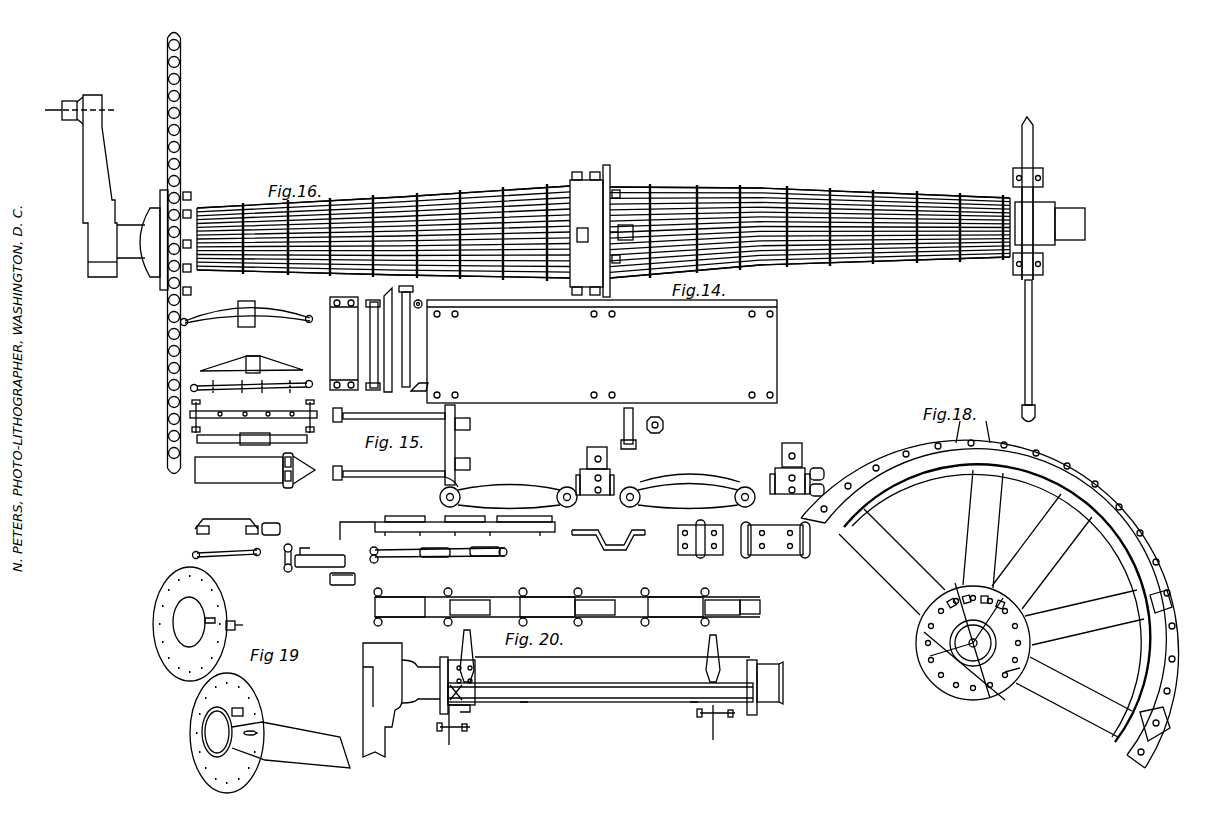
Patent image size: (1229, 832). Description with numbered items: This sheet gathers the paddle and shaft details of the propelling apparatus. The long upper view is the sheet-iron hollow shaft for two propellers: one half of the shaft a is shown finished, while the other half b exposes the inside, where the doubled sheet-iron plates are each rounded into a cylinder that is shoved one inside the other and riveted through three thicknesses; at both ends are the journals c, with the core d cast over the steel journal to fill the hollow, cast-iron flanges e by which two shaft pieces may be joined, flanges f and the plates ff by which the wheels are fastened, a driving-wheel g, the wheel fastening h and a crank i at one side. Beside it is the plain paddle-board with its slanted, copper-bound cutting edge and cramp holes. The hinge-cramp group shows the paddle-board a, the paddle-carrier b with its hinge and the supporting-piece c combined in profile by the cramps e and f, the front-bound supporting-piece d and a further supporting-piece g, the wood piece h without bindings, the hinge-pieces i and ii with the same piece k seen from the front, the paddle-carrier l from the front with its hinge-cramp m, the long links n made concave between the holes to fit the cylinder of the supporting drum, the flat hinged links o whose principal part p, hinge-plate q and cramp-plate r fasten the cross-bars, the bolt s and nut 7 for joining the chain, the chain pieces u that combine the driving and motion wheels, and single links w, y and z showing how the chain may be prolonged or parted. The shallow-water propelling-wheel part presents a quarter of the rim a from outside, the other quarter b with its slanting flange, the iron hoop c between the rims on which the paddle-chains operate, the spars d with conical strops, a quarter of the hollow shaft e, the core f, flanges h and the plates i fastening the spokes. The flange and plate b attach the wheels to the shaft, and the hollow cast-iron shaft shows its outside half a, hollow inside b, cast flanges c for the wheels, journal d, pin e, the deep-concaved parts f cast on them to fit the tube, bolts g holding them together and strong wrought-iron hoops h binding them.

In FIG. 16, the paddle-board / half of shaft / quarter of rim a is at (603, 228).
In FIG. 15, the paddle-board / half of shaft / quarter of rim a is at (389, 332).
In FIG. 19, the paddle-board / half of shaft / quarter of rim a is at (251, 680).
In FIG. 20, the paddle-board / half of shaft / quarter of rim a is at (600, 673).
In FIG. 18, the paddle-board / half of shaft / quarter of rim a is at (990, 594).
In FIG. 15, the paddle-carrier / other half of shaft / slanting flange / plate b is at (406, 329).
In FIG. 19, the paddle-carrier / other half of shaft / slanting flange / plate b is at (224, 667).
In FIG. 18, the paddle-carrier / other half of shaft / slanting flange / plate b is at (1162, 715).
In FIG. 16, the supporting-piece / journals / iron hoop / flanges c is at (601, 209).
In FIG. 15, the supporting-piece / journals / iron hoop / flanges c is at (373, 337).
In FIG. 19, the supporting-piece / journals / iron hoop / flanges c is at (234, 644).
In FIG. 20, the supporting-piece / journals / iron hoop / flanges c is at (586, 683).
In FIG. 18, the supporting-piece / journals / iron hoop / flanges c is at (1171, 597).
In FIG. 16, the supporting-piece / core / spars / journal d is at (597, 235).
In FIG. 15, the supporting-piece / core / spars / journal d is at (344, 335).
In FIG. 20, the supporting-piece / core / spars / journal d is at (401, 700).
In FIG. 18, the supporting-piece / core / spars / journal d is at (997, 603).
In FIG. 16, the cramp / cast-iron flanges / quarter of hollow shaft / pin e is at (601, 228).
In FIG. 15, the cramp / cast-iron flanges / quarter of hollow shaft / pin e is at (419, 297).
In FIG. 20, the cramp / cast-iron flanges / quarter of hollow shaft / pin e is at (770, 676).
In FIG. 18, the cramp / cast-iron flanges / quarter of hollow shaft / pin e is at (973, 641).
In FIG. 16, the cramp / flanges / core / cast filling parts f is at (595, 236).
In FIG. 15, the cramp / flanges / core / cast filling parts f is at (419, 381).
In FIG. 18, the cramp / flanges / core / cast filling parts f is at (967, 668).
In FIG. 16, the plates ff is at (601, 231).
In FIG. 16, the supporting-piece / driving-wheel / bolts g is at (179, 253).
In FIG. 15, the supporting-piece / driving-wheel / bolts g is at (247, 305).
In FIG. 20, the supporting-piece / driving-wheel / bolts g is at (459, 716).
In FIG. 18, the supporting-piece / driving-wheel / bolts g is at (991, 603).
In FIG. 16, the wood piece / wheel fastening / flanges / wrought-iron hoops h is at (1028, 269).
In FIG. 15, the wood piece / wheel fastening / flanges / wrought-iron hoops h is at (251, 355).
In FIG. 20, the wood piece / wheel fastening / flanges / wrought-iron hoops h is at (592, 682).
In FIG. 16, the hinge-piece / crank / plates i is at (81, 186).
In FIG. 15, the hinge-piece / crank / plates i is at (252, 382).
In FIG. 18, the hinge-piece / crank / plates i is at (966, 595).
In FIG. 15, the hinge-piece ii is at (253, 413).
In FIG. 15, the hinge-piece from front k is at (252, 431).
In FIG. 16, the paddle-carrier l is at (623, 227).
In FIG. 15, the paddle-carrier l is at (239, 470).
In FIG. 15, the hinge-cramp m is at (299, 477).
In FIG. 15, the long links n is at (597, 489).
In FIG. 15, the flat links with hinges o is at (700, 469).
In FIG. 15, the principal part of flat link p is at (775, 532).
In FIG. 18, the principal part of flat link p is at (973, 643).
In FIG. 15, the hinge-plate q is at (700, 544).
In FIG. 18, the hinge-plate q is at (1028, 677).
In FIG. 15, the cramp-plate r is at (608, 533).
In FIG. 15, the bolt s is at (625, 425).
In FIG. 15, the nut 7 is at (659, 416).
In FIG. 15, the pieces of the chain u is at (477, 571).
In FIG. 15, the single link of the chain w is at (290, 552).
In FIG. 15, the single link of the chain y is at (320, 553).
In FIG. 15, the single link of the chain z is at (349, 577).
In FIG. 20, the single link of the chain z is at (608, 706).